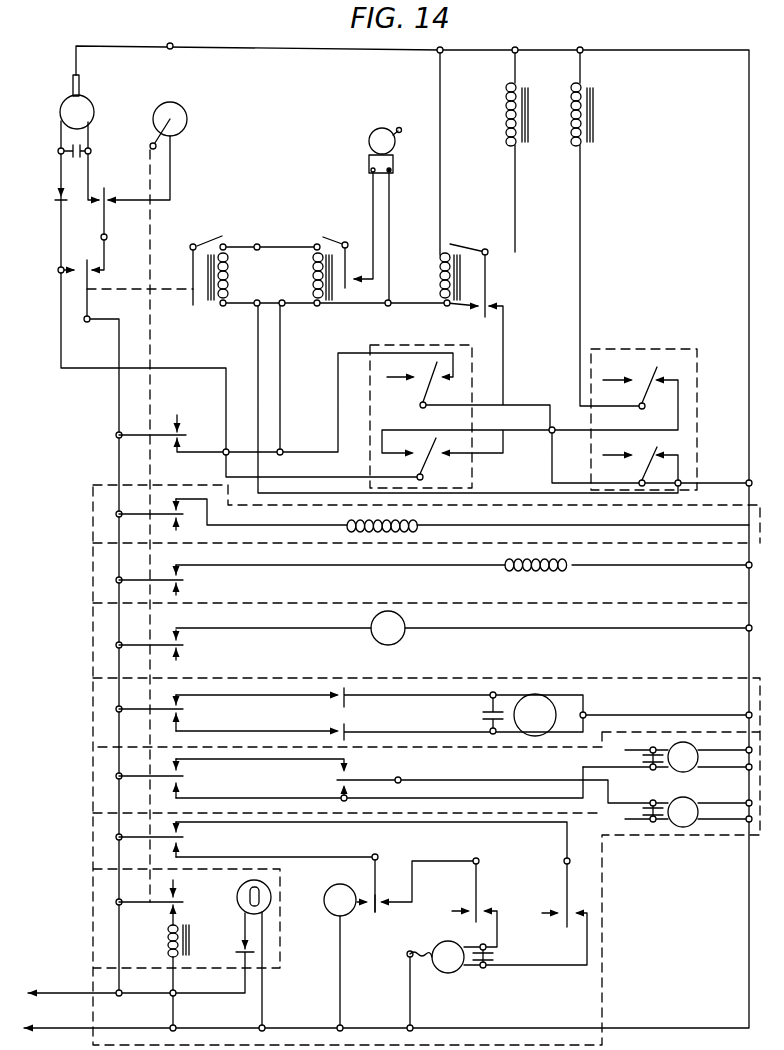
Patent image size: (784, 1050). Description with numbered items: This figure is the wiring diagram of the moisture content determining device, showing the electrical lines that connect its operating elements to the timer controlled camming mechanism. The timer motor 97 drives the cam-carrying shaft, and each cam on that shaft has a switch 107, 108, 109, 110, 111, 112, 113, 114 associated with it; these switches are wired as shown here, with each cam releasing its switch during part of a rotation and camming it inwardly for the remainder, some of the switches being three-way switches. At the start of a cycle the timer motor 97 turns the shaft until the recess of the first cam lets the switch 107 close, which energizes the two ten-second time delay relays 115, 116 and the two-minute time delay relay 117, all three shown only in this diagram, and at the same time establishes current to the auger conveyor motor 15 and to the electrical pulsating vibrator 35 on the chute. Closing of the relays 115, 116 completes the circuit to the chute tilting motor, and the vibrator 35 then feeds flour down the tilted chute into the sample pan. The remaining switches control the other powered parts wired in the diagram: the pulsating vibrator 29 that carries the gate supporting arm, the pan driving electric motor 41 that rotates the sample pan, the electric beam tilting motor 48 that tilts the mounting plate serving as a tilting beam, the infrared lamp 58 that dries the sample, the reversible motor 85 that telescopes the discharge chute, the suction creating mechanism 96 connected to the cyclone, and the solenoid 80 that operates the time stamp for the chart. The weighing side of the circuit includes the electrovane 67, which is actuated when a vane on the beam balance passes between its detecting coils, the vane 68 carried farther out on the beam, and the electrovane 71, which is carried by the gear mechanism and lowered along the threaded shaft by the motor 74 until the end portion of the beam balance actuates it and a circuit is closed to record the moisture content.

The electric motor 15 is at (60, 110).
The timer motor 97 is at (188, 118).
The ten-second time delay relay 116 is at (212, 240).
The two-minute time delay relay 117 is at (332, 238).
The ten-second time delay relay 115 is at (469, 242).
The electrical pulsating vibrator 35 is at (530, 114).
The pulsating vibrator 29 is at (598, 118).
The electrovane 67 is at (416, 343).
The vane 68 is at (642, 347).
The switch 107 is at (199, 420).
The switch 108 is at (184, 516).
The switch 109 is at (185, 582).
The solenoid 80 is at (540, 573).
The switch 110 is at (185, 648).
The suction creating mechanism 96 is at (380, 638).
The switch 111 is at (182, 708).
The reversible motor 85 is at (525, 727).
The switch 112 is at (182, 776).
The pan driving electric motor 41 is at (675, 767).
The electric beam tilting motor 48 is at (675, 822).
The switch 113 is at (183, 838).
The switch 114 is at (182, 897).
The infrared lamp 58 is at (272, 893).
The electrovane 71 is at (380, 907).
The motor 74 is at (440, 967).